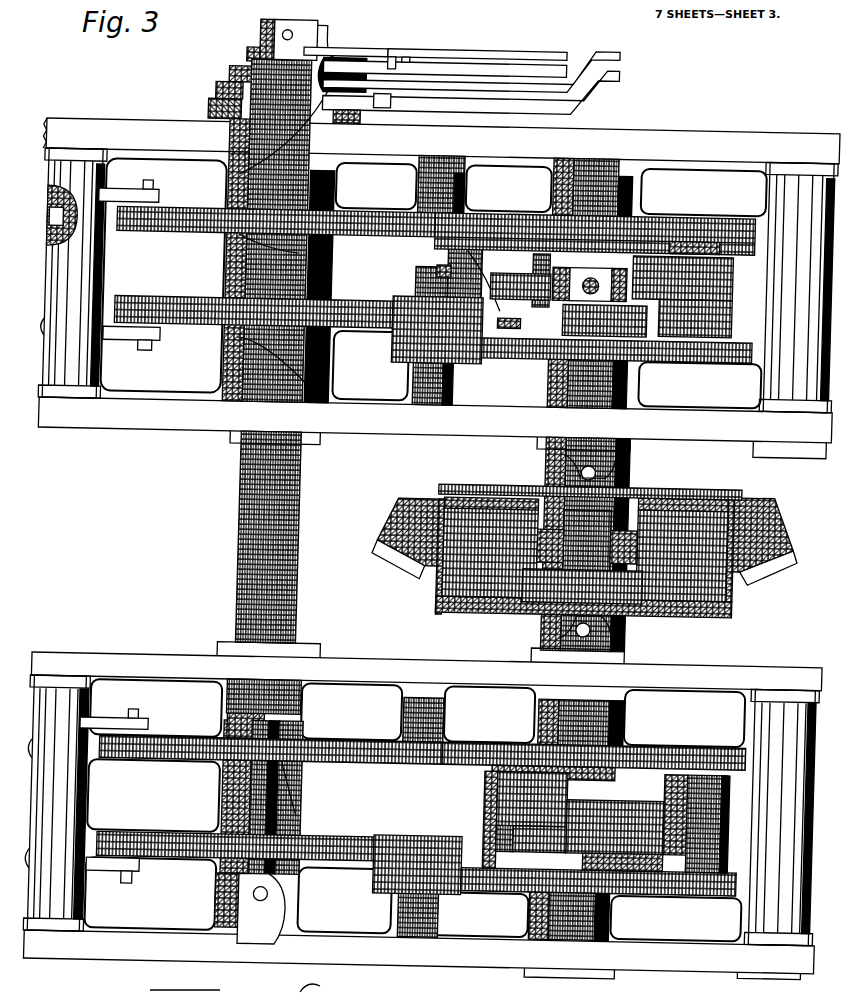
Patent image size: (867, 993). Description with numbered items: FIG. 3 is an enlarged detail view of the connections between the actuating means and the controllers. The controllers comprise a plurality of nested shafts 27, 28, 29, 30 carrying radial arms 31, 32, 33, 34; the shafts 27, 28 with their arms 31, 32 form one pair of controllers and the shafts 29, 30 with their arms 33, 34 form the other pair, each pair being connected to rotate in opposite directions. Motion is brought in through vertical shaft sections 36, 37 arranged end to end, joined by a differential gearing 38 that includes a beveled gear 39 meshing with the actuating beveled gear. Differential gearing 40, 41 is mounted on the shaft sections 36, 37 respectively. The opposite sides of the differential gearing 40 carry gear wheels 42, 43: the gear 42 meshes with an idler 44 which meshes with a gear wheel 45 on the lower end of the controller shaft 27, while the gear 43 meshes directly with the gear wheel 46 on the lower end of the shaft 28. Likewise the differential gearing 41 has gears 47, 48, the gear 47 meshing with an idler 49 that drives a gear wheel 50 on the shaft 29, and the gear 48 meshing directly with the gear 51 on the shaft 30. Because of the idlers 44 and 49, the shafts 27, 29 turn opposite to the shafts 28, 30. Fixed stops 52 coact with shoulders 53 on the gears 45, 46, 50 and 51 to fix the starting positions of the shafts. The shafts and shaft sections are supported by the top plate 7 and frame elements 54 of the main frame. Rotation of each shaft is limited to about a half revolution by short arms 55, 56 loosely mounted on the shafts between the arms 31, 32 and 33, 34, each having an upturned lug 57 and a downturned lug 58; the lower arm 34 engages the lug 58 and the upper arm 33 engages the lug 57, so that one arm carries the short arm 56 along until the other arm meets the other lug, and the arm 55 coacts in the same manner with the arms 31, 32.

The top plate 7 is at (108, 138).
The controller shaft 27 is at (258, 18).
The controller shaft 28 is at (246, 54).
The controller shaft 29 is at (229, 87).
The controller shaft 30 is at (216, 104).
The radial arm 31 is at (527, 42).
The radial arm 32 is at (488, 55).
The radial arm 33 is at (618, 43).
The radial arm 34 is at (618, 79).
The shaft section 36 is at (572, 632).
The shaft section 37 is at (581, 479).
The differential gearing 38 is at (550, 571).
The beveled gear 39 is at (405, 541).
The differential gearing 40 is at (624, 805).
The differential gearing 41 is at (547, 302).
The gear wheel 42 is at (525, 870).
The gear wheel 43 is at (519, 740).
The idler 44 is at (409, 885).
The gear wheel 45 is at (346, 837).
The gear wheel 46 is at (199, 736).
The gear 47 is at (513, 338).
The gear 48 is at (526, 206).
The idler 49 is at (398, 354).
The gear wheel 50 is at (348, 325).
The gear 51 is at (359, 208).
The fixed stop 52 is at (124, 192).
The shoulder 53 is at (151, 181).
The frame element 54 is at (136, 411).
The short arm 55 is at (353, 42).
The short arm 56 is at (367, 84).
The upturned lug 57 is at (390, 42).
The downturned lug 58 is at (408, 45).